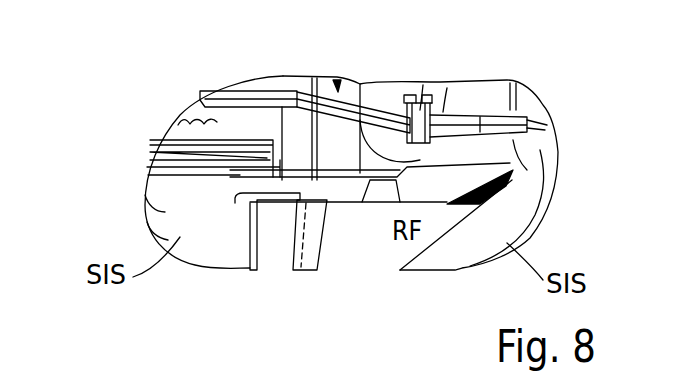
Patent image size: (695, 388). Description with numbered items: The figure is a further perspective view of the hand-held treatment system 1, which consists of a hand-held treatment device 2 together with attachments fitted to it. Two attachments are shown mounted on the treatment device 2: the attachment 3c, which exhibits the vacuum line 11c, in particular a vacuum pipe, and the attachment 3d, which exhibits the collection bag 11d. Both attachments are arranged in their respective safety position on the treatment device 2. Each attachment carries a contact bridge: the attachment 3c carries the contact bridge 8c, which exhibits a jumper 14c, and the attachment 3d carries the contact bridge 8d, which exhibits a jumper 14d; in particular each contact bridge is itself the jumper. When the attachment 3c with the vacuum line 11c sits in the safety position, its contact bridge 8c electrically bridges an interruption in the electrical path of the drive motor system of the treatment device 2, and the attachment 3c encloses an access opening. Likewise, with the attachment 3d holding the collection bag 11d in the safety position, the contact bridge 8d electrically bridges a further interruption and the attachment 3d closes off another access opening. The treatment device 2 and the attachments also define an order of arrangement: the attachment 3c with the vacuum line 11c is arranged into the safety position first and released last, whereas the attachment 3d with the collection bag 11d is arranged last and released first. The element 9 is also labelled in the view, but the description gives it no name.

The treatment system 1 is at (148, 110).
The treatment device 2 is at (302, 92).
The serrated rail 9 is at (180, 133).
The contact bridge 8c is at (153, 166).
The jumper 14c is at (245, 171).
The attachment 3c is at (167, 203).
The vacuum line 11c is at (163, 227).
The contact bridge 8d is at (307, 247).
The jumper 14d is at (343, 190).
The attachment 3d is at (527, 210).
The collection bag 11d is at (520, 230).